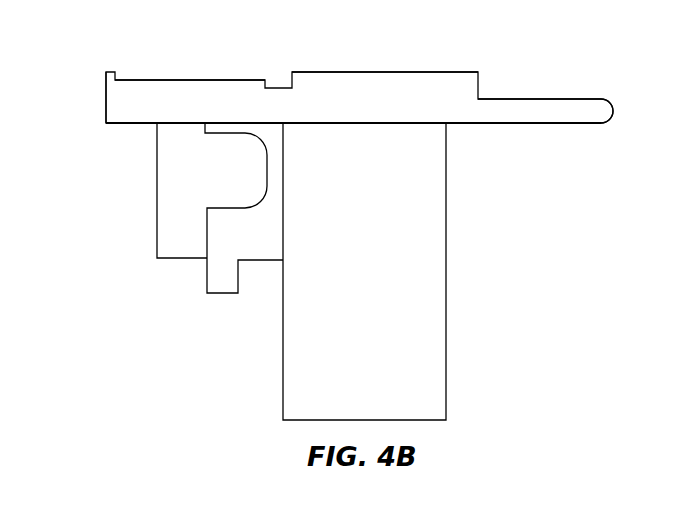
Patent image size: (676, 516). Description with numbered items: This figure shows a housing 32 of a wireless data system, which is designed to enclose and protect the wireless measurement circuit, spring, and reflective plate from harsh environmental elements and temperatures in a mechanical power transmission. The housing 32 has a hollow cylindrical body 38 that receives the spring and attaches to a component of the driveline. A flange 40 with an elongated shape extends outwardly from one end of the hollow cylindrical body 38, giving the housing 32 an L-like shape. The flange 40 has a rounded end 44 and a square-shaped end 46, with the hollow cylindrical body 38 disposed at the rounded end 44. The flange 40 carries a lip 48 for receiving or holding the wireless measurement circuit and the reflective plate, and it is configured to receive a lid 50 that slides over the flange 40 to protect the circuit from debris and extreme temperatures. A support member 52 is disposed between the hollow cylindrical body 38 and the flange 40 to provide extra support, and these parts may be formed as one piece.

The housing 32 is at (520, 315).
The hollow cylindrical body 38 is at (426, 228).
The flange 40 is at (290, 47).
The rounded end 44 is at (598, 111).
The square-shaped end 46 is at (108, 112).
The lip 48 is at (192, 88).
The lid 50 is at (415, 88).
The support member 52 is at (176, 240).